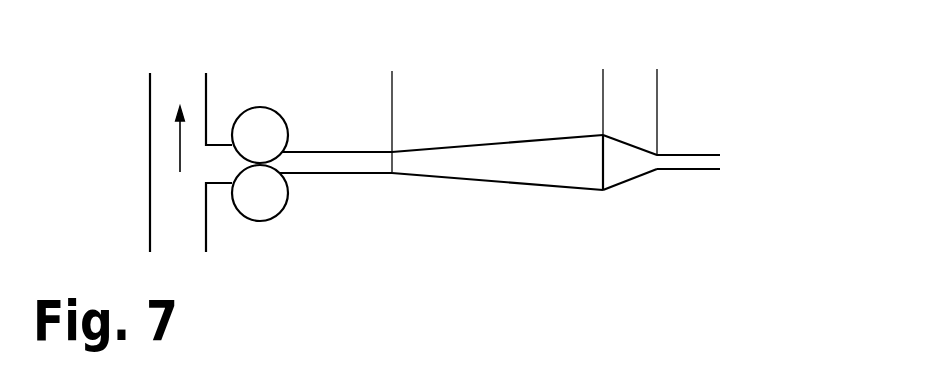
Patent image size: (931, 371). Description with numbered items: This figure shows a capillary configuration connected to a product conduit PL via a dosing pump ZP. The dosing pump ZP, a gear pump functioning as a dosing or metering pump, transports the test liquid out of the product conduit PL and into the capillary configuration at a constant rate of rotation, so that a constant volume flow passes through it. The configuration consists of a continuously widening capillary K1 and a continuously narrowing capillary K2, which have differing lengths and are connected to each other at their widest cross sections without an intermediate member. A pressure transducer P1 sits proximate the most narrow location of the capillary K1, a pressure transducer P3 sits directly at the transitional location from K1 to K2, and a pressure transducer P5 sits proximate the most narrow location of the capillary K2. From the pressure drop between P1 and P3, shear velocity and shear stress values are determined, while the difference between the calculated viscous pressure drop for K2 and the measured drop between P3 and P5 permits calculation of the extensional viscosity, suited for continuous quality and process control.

The product conduit PL is at (182, 166).
The dosing pump ZP is at (268, 208).
The continuously widening capillary K1 is at (507, 183).
The continuously narrowing capillary K2 is at (633, 180).
The pressure transducer P1 is at (392, 98).
The pressure transducer P3 is at (603, 80).
The pressure transducer P5 is at (657, 90).